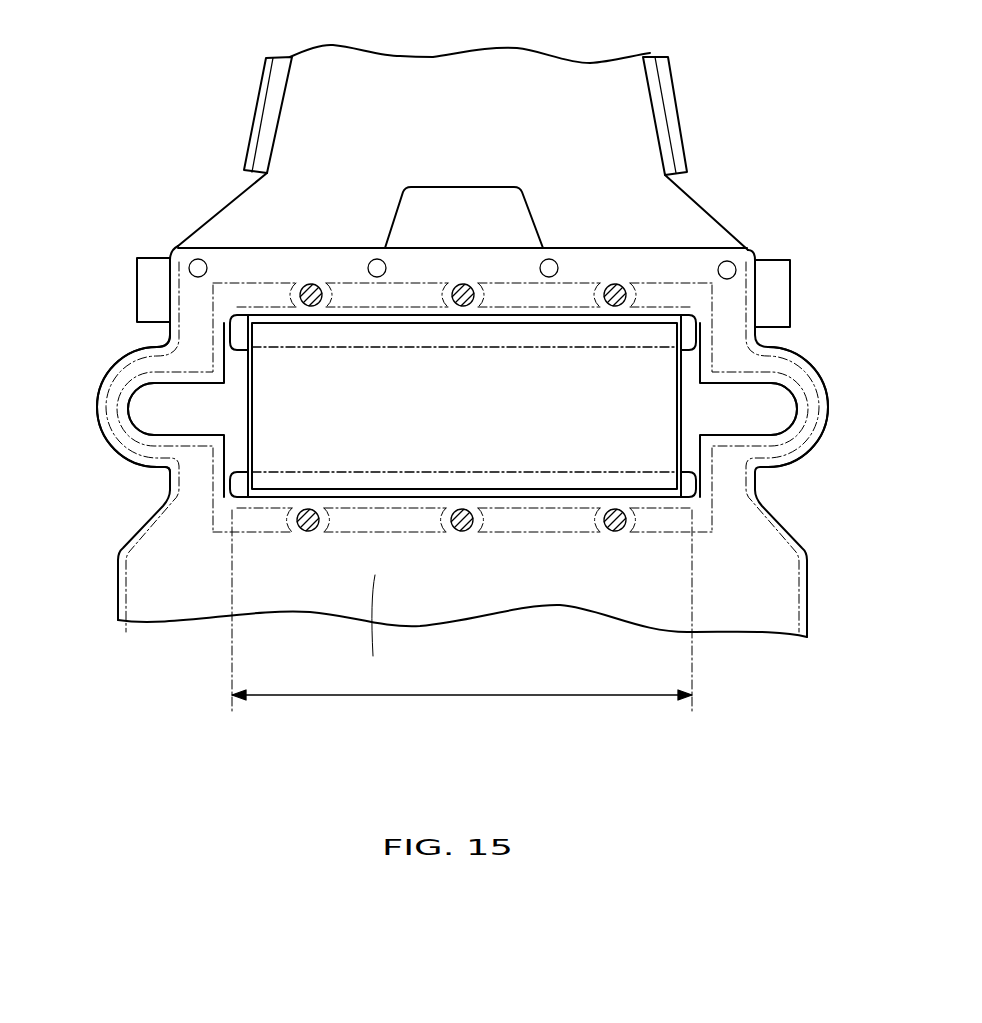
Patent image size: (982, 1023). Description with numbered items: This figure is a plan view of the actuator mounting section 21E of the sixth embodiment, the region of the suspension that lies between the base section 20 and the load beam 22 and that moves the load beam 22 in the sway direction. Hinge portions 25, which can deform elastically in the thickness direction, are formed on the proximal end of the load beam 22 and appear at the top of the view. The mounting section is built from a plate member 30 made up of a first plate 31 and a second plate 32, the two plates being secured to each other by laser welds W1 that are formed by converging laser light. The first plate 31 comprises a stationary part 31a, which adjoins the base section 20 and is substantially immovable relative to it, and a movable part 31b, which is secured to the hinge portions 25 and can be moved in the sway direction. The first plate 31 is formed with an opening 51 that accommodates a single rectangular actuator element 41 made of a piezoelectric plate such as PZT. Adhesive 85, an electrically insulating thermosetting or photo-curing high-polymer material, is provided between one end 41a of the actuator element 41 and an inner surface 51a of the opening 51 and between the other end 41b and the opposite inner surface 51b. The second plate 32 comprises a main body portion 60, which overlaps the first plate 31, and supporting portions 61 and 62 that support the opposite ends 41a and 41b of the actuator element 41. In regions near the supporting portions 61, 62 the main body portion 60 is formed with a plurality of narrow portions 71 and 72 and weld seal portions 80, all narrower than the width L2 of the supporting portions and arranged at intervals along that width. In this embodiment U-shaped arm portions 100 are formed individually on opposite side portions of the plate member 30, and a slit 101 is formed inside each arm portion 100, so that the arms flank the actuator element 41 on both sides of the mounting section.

The base section 20 is at (808, 570).
The actuator mounting section 21E is at (842, 188).
The load beam 22 is at (470, 62).
The hinge portions 25 is at (240, 208).
The plate member 30 is at (571, 609).
The first plate 31 is at (507, 612).
The stationary part 31a is at (375, 630).
The movable part 31b is at (470, 188).
The second plate 32 is at (800, 606).
The actuator element 41 is at (464, 406).
The one end of actuator element 41a is at (245, 320).
The other end of actuator element 41b is at (290, 495).
The opening 51 is at (192, 403).
The inner surface of opening 51a is at (525, 326).
The inner surface of opening 51b is at (552, 488).
The main body portion 60 is at (735, 622).
The supporting portion 61 is at (172, 333).
The supporting portion 62 is at (170, 485).
The narrow portions 71 is at (298, 290).
The narrow portions 72 is at (322, 530).
The weld seal portions 80 is at (312, 284).
The adhesive 85 is at (596, 316).
The U-shaped arm portions 100 is at (95, 405).
The slit 101 is at (140, 425).
The laser welds W1 is at (165, 277).
The width of supporting portions L2 is at (458, 697).